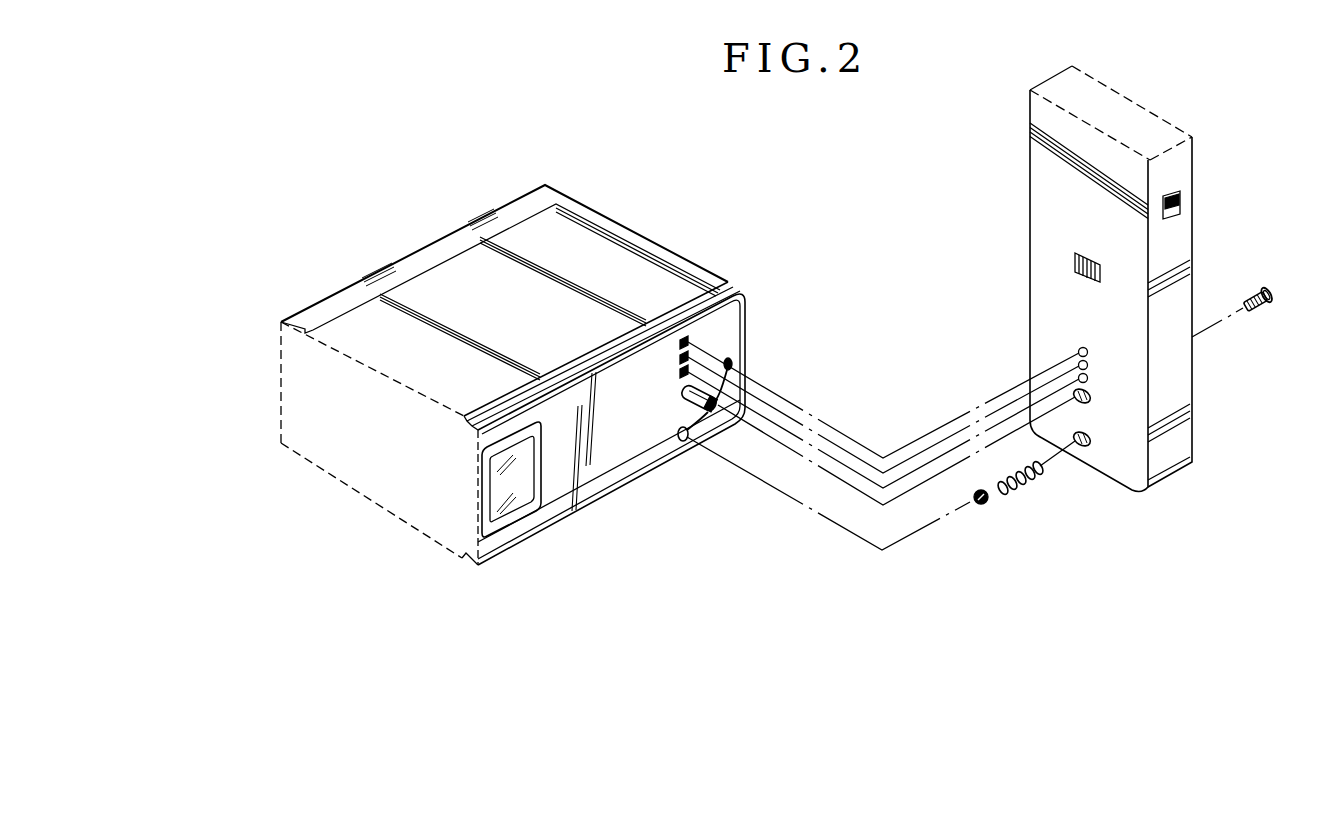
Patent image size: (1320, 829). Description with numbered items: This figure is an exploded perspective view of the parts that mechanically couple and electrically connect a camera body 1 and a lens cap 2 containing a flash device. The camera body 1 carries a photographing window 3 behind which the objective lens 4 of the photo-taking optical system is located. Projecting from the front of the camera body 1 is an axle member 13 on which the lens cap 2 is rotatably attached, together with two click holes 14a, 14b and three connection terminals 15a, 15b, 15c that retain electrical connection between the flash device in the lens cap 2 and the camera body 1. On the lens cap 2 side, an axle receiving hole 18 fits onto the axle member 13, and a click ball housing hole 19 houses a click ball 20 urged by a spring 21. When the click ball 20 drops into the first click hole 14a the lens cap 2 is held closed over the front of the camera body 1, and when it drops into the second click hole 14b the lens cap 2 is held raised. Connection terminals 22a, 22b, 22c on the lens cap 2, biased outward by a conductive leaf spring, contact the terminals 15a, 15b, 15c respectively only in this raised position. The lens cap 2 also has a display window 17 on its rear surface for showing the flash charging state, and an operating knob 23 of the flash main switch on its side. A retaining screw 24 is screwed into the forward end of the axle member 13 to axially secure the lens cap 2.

The camera body 1 is at (513, 375).
The lens cap 2 is at (1044, 317).
The photographing window 3 is at (522, 517).
The objective lens 4 is at (494, 518).
The axle member 13 is at (692, 397).
The first click hole 14a is at (730, 360).
The second click hole 14b is at (681, 441).
The connection terminal 15a is at (682, 338).
The connection terminal 15b is at (680, 356).
The connection terminal 15c is at (680, 370).
The display window 17 is at (1093, 245).
The axle receiving hole 18 is at (1090, 402).
The click ball housing hole 19 is at (1090, 441).
The click ball 20 is at (982, 505).
The spring 21 is at (1017, 492).
The connection terminal 22a is at (1087, 349).
The connection terminal 22b is at (1087, 366).
The connection terminal 22c is at (1088, 377).
The operating knob 23 is at (1182, 203).
The retaining screw 24 is at (1270, 312).